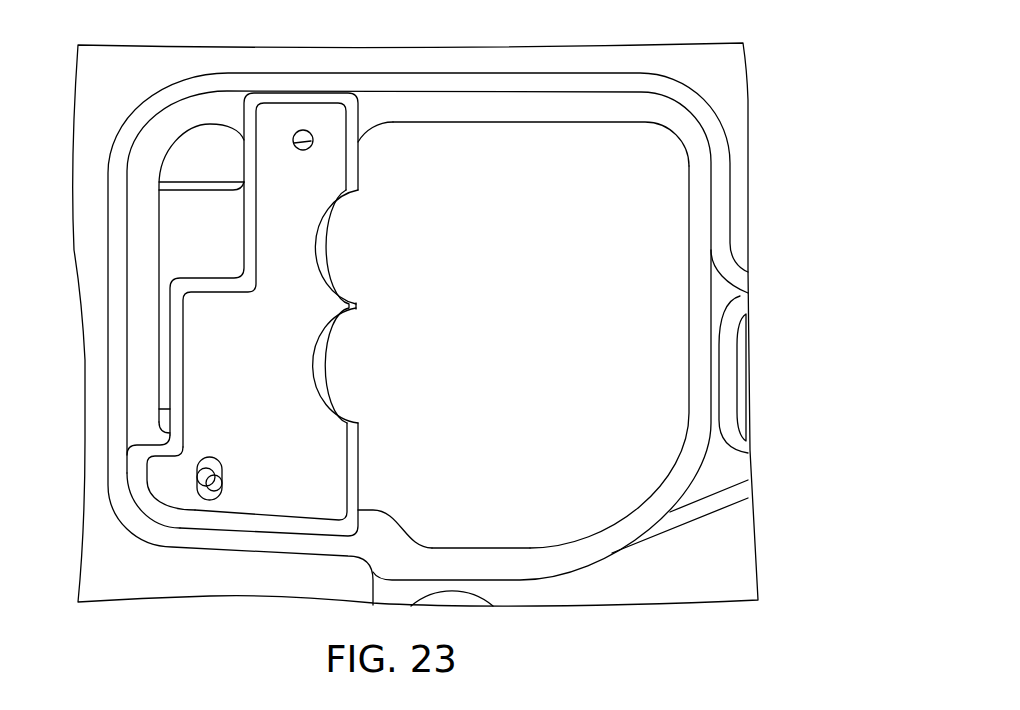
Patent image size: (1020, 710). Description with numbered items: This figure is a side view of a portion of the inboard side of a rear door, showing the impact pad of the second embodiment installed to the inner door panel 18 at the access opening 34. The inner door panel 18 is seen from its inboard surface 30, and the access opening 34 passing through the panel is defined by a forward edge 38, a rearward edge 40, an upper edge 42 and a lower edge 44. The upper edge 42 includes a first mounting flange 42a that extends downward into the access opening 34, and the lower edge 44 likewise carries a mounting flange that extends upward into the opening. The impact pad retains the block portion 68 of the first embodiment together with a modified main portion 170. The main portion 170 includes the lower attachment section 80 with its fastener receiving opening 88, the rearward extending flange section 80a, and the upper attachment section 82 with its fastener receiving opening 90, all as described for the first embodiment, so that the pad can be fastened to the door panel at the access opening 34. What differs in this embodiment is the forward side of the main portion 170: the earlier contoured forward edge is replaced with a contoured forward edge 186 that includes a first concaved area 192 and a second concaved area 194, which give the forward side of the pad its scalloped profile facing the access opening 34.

The inner door panel 18 is at (696, 45).
The inboard surface 30 is at (720, 80).
The access opening 34 is at (559, 122).
The forward edge 38 is at (688, 292).
The rearward edge 40 is at (161, 252).
The upper edge 42 is at (505, 122).
The first mounting flange 42a is at (372, 128).
The lower edge 44 is at (483, 547).
The block portion 68 is at (203, 211).
The lower attachment section 80 is at (322, 478).
The rearward extending flange section 80a is at (174, 483).
The upper attachment section 82 is at (323, 118).
The fastener receiving opening 88 is at (298, 148).
The fastener receiving opening 90 is at (221, 470).
The main portion 170 is at (262, 412).
The contoured forward edge 186 is at (358, 308).
The first concaved area 192 is at (322, 252).
The second concaved area 194 is at (322, 376).